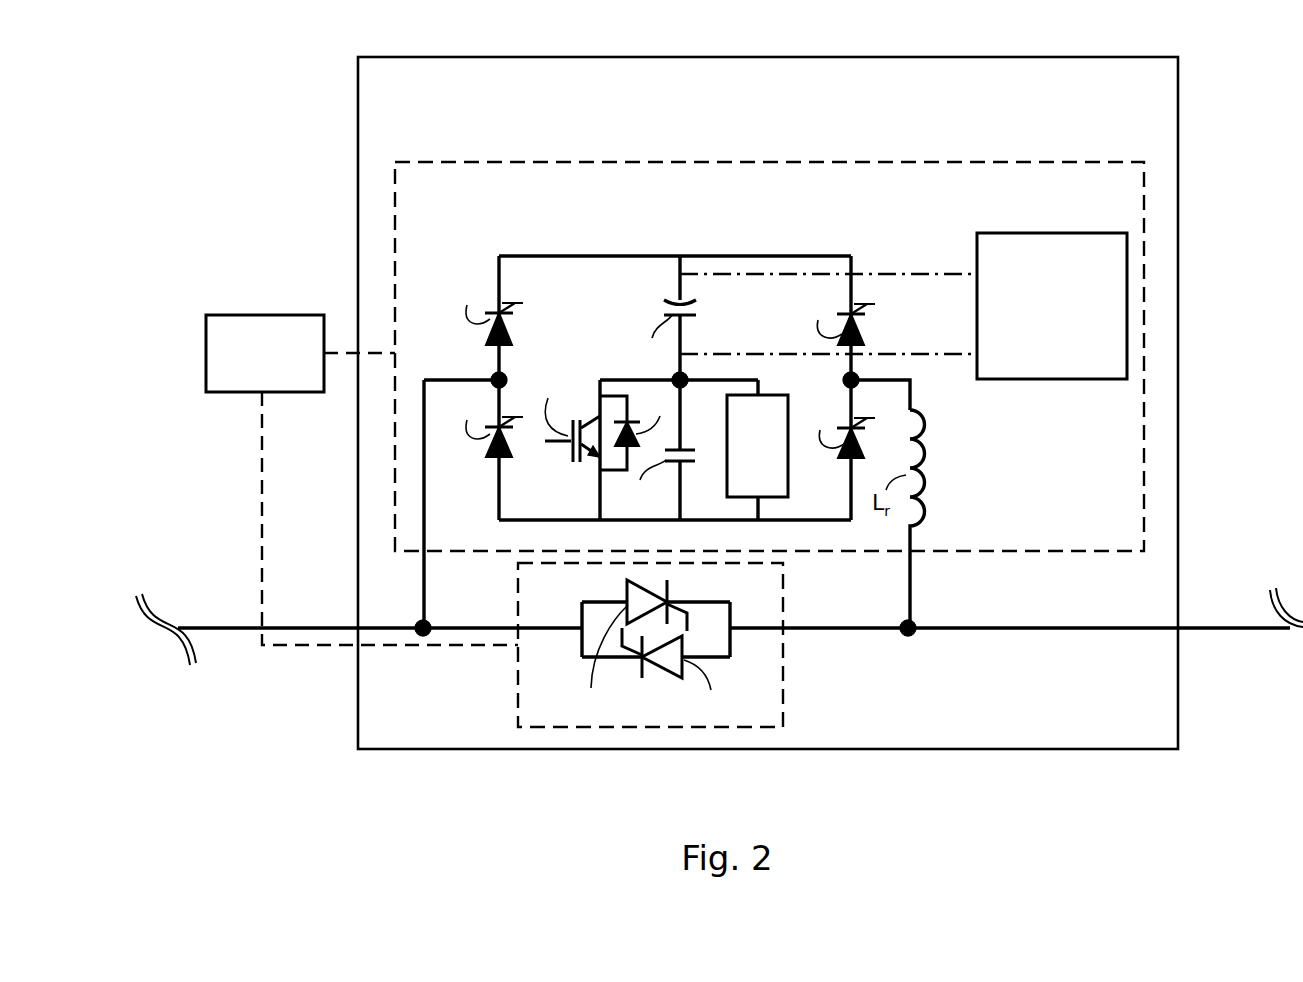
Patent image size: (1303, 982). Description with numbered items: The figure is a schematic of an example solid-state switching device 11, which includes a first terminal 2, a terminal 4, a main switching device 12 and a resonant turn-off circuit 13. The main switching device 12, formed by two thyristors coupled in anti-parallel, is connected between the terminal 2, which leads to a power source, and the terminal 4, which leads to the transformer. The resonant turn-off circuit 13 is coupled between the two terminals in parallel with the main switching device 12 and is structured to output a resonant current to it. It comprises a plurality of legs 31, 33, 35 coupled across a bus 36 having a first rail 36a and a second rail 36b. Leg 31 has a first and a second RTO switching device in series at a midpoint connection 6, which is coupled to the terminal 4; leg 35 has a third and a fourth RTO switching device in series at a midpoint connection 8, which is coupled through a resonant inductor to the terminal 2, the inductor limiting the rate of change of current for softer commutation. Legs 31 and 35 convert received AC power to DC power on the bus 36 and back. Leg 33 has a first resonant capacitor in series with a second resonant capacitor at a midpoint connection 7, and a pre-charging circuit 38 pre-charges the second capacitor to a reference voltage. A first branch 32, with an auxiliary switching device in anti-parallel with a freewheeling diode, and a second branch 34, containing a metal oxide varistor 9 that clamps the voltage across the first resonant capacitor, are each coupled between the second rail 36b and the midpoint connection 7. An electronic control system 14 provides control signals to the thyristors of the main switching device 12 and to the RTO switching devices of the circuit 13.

The first terminal 2 is at (912, 620).
The terminal 4 is at (426, 620).
The midpoint connection 6 is at (503, 376).
The midpoint connection 7 is at (686, 374).
The midpoint connection 8 is at (856, 375).
The metal oxide varistor 9 is at (790, 445).
The solid-state switching device 11 is at (340, 105).
The main switching device 12 is at (793, 662).
The resonant turn-off circuit 13 is at (748, 150).
The electronic control system 14 is at (265, 315).
The leg 31 is at (503, 245).
The first branch 32 is at (605, 358).
The leg 33 is at (688, 245).
The second branch 34 is at (776, 412).
The leg 35 is at (856, 243).
The bus 36 is at (671, 400).
The first rail 36a is at (543, 256).
The second rail 36b is at (516, 520).
The pre-charging circuit 38 is at (1052, 233).